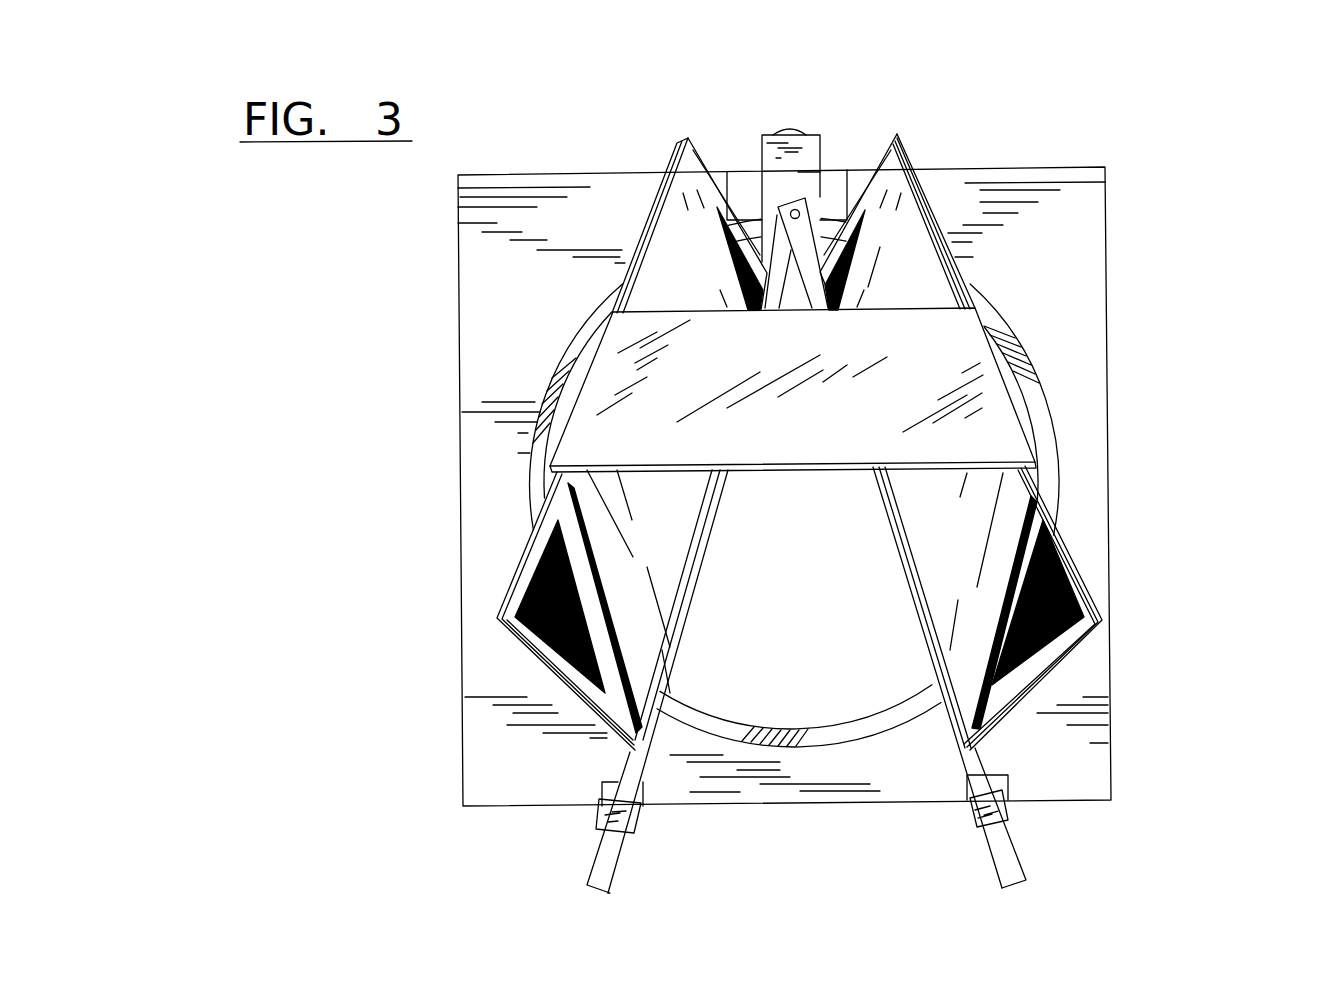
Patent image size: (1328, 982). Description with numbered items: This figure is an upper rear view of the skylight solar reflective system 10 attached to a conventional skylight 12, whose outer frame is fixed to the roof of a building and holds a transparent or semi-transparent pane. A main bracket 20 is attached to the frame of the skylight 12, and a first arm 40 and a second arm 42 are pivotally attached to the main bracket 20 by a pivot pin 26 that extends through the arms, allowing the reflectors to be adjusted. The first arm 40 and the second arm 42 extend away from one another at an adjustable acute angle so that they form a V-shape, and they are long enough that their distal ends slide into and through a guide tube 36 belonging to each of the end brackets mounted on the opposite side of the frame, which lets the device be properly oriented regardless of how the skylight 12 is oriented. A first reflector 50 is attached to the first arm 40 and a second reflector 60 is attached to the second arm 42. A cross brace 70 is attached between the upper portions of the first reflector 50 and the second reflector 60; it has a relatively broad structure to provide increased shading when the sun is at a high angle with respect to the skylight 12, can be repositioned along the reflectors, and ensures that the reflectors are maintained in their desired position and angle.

The skylight solar reflective system 10 is at (1175, 177).
The skylight 12 is at (1108, 397).
The main bracket 20 is at (764, 132).
The pivot pin 26 is at (820, 172).
The guide tube 36 is at (610, 800).
The first arm 40 is at (605, 868).
The second arm 42 is at (1013, 858).
The first reflector 50 is at (630, 555).
The second reflector 60 is at (973, 558).
The cross brace 70 is at (955, 350).